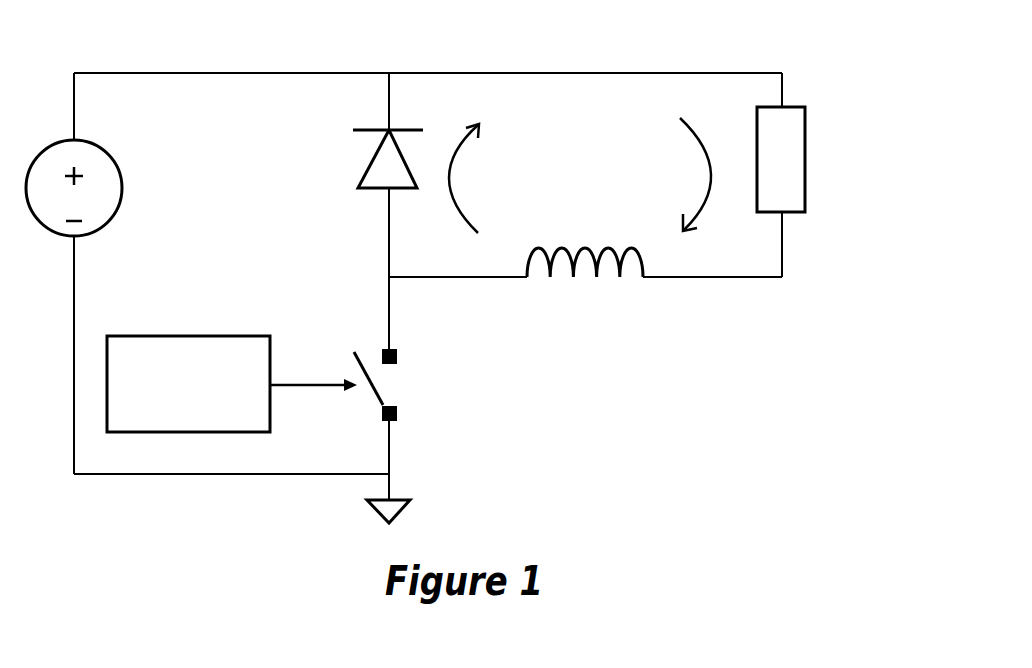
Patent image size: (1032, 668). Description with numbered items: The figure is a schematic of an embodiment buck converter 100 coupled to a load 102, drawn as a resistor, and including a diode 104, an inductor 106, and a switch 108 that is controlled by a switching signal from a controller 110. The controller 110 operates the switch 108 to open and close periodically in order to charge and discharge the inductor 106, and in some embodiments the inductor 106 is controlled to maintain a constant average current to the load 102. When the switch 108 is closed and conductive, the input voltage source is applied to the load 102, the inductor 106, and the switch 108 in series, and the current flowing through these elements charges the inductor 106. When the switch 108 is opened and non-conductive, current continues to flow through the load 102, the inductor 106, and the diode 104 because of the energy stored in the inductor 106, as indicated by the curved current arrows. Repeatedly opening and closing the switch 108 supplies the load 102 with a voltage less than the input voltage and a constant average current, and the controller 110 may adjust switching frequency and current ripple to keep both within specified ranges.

The buck converter 100 is at (842, 81).
The load 102 is at (805, 160).
The diode 104 is at (370, 158).
The inductor 106 is at (597, 278).
The switch 108 is at (377, 390).
The controller 110 is at (188, 336).